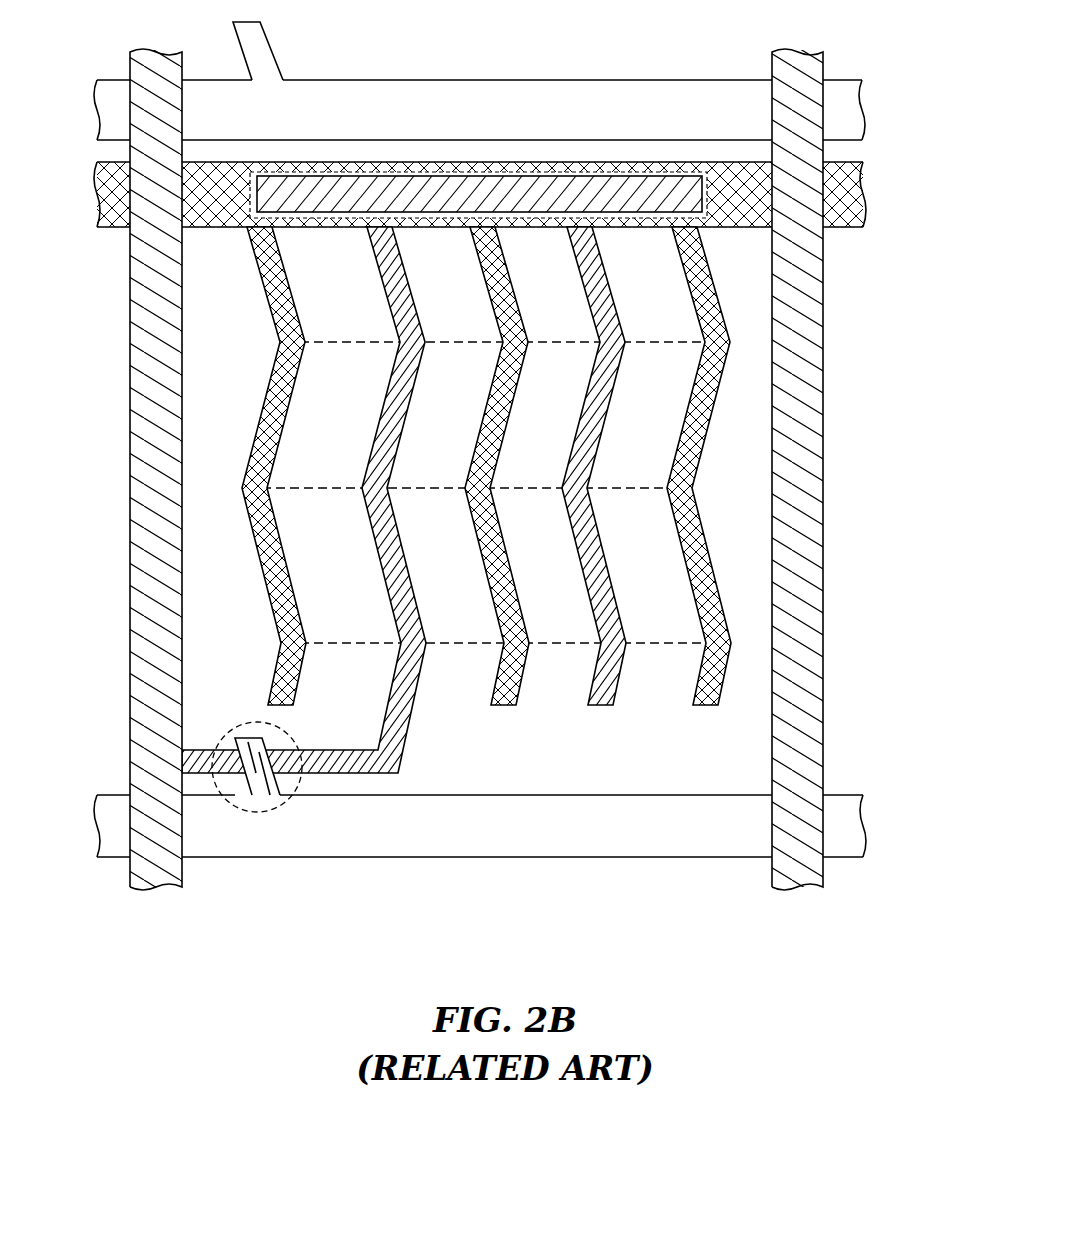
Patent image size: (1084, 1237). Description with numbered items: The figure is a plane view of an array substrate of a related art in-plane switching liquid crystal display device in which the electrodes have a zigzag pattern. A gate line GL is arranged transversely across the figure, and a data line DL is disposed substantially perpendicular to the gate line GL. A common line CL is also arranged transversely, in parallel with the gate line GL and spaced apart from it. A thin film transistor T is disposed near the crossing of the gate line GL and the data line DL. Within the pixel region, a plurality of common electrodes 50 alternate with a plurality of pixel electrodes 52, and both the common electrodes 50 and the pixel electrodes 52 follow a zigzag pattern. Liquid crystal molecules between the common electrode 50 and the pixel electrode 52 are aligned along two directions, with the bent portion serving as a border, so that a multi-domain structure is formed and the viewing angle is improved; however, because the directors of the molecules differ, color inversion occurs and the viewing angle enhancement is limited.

The common electrode 50 is at (284, 268).
The pixel electrode 52 is at (410, 405).
The gate line GL is at (862, 117).
The common line CL is at (866, 190).
The data line DL is at (158, 863).
The thin film transistor T is at (260, 812).